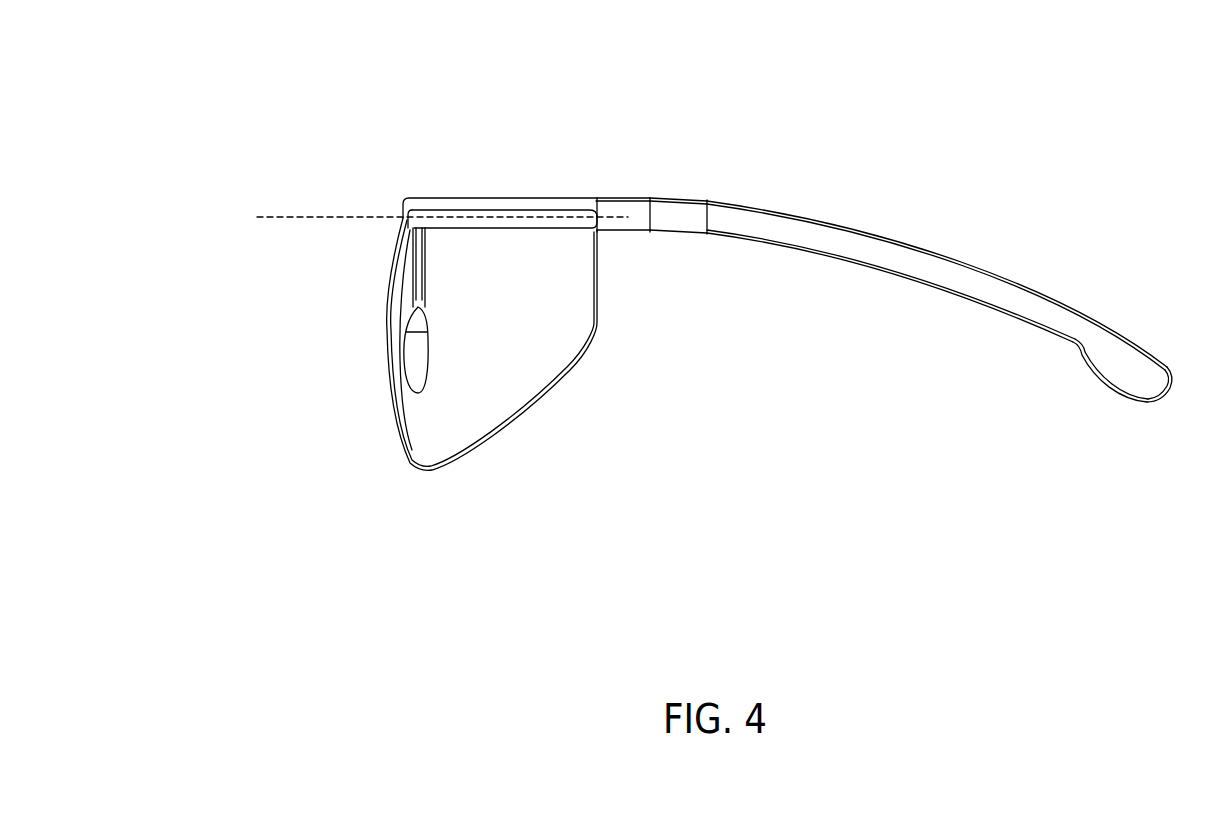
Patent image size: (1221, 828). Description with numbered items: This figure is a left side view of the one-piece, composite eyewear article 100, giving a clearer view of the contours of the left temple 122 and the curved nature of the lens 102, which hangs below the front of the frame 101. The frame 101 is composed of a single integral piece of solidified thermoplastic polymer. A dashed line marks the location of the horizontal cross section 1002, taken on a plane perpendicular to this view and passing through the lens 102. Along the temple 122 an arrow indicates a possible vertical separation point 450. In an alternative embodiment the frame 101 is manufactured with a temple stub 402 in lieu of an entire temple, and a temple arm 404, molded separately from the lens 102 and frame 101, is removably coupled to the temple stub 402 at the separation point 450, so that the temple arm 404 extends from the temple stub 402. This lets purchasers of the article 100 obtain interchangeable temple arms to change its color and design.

The one-piece, composite eyewear article 100 is at (377, 66).
The frame 101 is at (420, 197).
The horizontal cross section 1002 is at (257, 217).
The lens 102 is at (430, 467).
The vertical separation point 450 is at (710, 190).
The temple stub 402 is at (685, 237).
The temple arm 404 is at (807, 257).
The left temple 122 is at (892, 233).